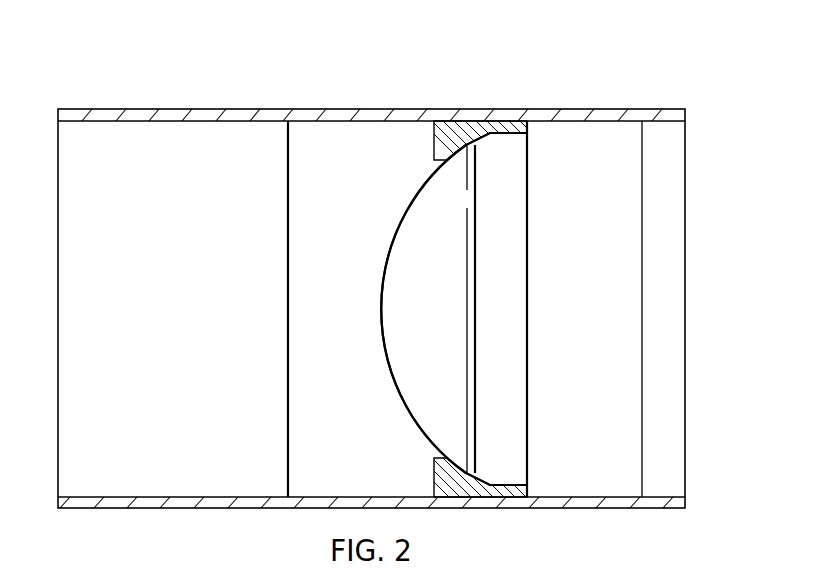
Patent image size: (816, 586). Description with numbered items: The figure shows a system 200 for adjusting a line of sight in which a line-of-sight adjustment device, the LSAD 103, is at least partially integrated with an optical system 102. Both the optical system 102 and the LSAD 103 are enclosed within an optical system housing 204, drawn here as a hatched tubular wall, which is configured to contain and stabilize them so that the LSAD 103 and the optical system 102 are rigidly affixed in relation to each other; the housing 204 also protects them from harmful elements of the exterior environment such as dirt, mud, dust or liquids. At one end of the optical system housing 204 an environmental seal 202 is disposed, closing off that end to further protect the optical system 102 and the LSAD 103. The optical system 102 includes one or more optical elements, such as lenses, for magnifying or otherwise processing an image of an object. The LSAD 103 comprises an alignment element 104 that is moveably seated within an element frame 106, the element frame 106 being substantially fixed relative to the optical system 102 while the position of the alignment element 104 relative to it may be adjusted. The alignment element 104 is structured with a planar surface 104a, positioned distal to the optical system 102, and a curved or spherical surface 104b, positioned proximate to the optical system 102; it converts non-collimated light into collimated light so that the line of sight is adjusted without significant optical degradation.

The system for adjusting a line of sight 200 is at (221, 63).
The optical system housing 204 is at (503, 109).
The environmental seal 202 is at (676, 212).
The optical system 102 is at (192, 323).
The LSAD 103 is at (539, 404).
The element frame 106 is at (433, 135).
The alignment element 104 is at (413, 417).
The planar surface 104a is at (475, 400).
The curved surface 104b is at (396, 392).